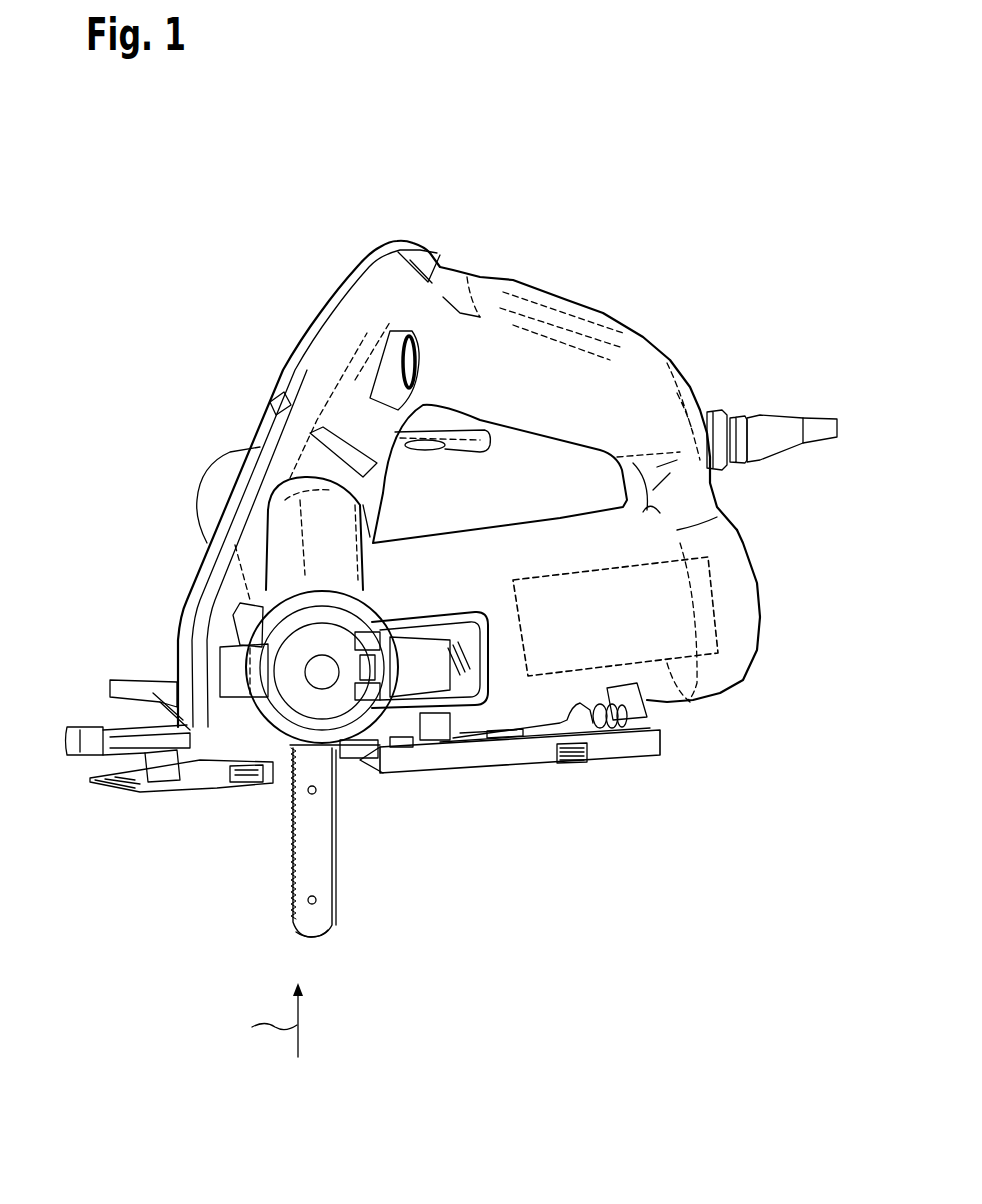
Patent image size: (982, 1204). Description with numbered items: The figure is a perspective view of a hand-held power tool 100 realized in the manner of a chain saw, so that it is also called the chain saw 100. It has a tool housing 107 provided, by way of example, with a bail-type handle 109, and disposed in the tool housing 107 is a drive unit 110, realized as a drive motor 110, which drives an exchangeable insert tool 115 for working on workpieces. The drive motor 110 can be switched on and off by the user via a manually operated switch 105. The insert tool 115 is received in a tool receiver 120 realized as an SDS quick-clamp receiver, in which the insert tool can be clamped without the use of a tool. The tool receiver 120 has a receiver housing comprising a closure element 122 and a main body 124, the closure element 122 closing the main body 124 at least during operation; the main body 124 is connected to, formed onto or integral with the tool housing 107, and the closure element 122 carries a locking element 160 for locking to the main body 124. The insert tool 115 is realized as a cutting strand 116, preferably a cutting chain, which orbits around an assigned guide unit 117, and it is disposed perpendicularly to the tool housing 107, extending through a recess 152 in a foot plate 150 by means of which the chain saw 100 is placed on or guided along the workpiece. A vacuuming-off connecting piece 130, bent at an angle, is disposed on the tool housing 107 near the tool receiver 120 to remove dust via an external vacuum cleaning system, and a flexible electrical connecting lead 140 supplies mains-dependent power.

The hand-held power tool 100 is at (288, 242).
The manually operated switch 105 is at (470, 423).
The tool housing 107 is at (722, 630).
The bail-type handle 109 is at (485, 337).
The drive unit 110 is at (700, 703).
The exchangeable insert tool 115 is at (280, 829).
The cutting strand 116 is at (293, 892).
The guide unit 117 is at (318, 915).
The tool receiver 120 is at (215, 630).
The closure element 122 is at (300, 692).
The main body 124 is at (247, 632).
The vacuuming-off connecting piece 130 is at (317, 517).
The flexible electrical connecting lead 140 is at (778, 428).
The foot plate 150 is at (542, 752).
The recess 152 is at (353, 780).
The locking element 160 is at (425, 672).